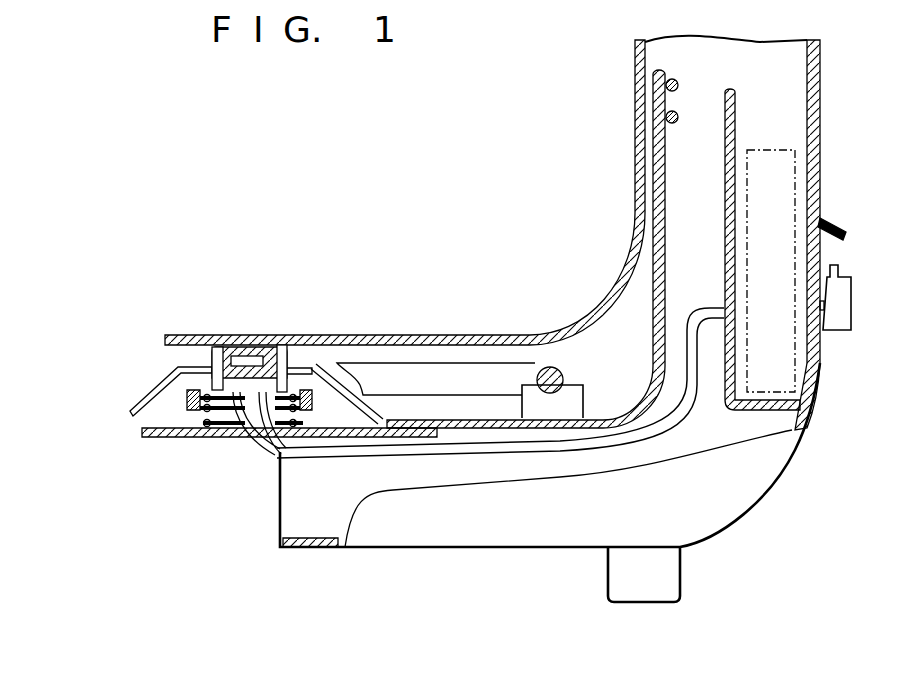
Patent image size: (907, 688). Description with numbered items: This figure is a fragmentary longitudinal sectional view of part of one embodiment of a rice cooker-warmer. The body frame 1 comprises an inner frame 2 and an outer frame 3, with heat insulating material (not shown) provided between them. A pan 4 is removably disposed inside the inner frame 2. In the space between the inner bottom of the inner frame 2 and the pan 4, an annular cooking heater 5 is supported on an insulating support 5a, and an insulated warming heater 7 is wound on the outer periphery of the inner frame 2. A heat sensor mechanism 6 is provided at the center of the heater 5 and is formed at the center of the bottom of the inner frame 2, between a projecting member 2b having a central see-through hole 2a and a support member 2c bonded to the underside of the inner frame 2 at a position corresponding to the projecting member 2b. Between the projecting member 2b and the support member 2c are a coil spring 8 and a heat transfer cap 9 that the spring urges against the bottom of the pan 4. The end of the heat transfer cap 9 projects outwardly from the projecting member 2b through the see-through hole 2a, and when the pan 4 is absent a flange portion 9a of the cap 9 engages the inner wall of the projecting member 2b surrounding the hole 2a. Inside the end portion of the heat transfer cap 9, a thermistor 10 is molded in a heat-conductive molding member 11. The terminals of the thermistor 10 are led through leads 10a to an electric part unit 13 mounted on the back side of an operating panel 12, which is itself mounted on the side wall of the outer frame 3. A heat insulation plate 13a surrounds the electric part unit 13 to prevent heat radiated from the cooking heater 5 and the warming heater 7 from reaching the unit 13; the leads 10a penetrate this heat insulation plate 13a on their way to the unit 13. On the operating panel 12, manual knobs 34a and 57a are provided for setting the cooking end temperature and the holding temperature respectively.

The body frame 1 is at (830, 88).
The inner frame 2 is at (665, 272).
The see-through hole 2a is at (213, 368).
The projecting member 2b is at (343, 392).
The support member 2c is at (376, 437).
The outer frame 3 is at (782, 462).
The pan 4 is at (635, 122).
The cooking heater 5 is at (557, 368).
The insulating support 5a is at (584, 397).
The heat sensor mechanism 6 is at (181, 403).
The warming heater 7 is at (680, 114).
The coil spring 8 is at (205, 415).
The heat transfer cap 9 is at (280, 350).
The flange portion 9a is at (325, 364).
The thermistor 10 is at (252, 362).
The leads 10a is at (612, 440).
The heat-conductive molding member 11 is at (265, 355).
The operating panel 12 is at (822, 110).
The electric part unit 13 is at (762, 150).
The heat insulation plate 13a is at (725, 155).
The manual knob 34a is at (851, 278).
The manual knob 57a is at (841, 221).